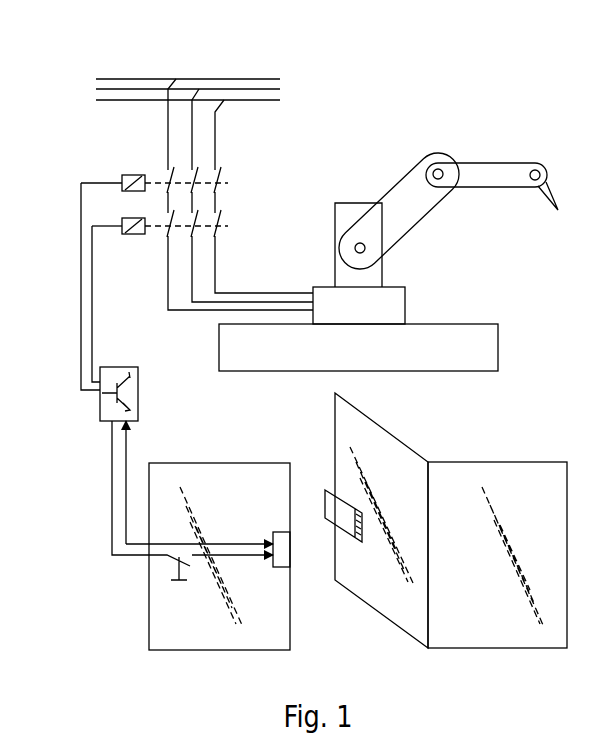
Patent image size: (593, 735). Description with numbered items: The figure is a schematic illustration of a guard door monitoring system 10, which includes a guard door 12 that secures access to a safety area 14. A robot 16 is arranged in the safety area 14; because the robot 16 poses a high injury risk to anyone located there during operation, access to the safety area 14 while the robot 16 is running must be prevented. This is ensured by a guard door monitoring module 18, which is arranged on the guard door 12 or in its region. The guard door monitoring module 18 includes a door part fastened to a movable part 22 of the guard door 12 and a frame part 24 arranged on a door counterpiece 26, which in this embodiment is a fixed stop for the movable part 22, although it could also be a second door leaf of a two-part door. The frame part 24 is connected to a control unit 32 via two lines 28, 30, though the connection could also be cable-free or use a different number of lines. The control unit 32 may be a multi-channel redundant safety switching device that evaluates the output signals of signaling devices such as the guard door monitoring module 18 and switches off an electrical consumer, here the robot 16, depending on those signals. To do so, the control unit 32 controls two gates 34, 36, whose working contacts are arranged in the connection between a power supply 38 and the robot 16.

The guard door monitoring system 10 is at (473, 78).
The guard door 12 is at (318, 618).
The safety area 14 is at (465, 436).
The robot 16 is at (405, 192).
The guard door monitoring module 18 is at (313, 485).
The movable part 22 is at (372, 440).
The frame part 24 is at (282, 540).
The door counterpiece 26 is at (290, 582).
The line 28 is at (112, 478).
The line 30 is at (128, 455).
The control unit 32 is at (105, 408).
The gate 34 is at (127, 175).
The gate 36 is at (130, 234).
The power supply 38 is at (240, 73).